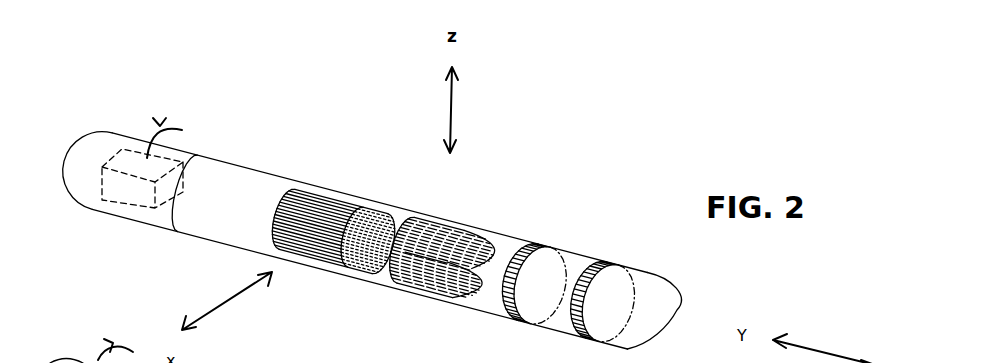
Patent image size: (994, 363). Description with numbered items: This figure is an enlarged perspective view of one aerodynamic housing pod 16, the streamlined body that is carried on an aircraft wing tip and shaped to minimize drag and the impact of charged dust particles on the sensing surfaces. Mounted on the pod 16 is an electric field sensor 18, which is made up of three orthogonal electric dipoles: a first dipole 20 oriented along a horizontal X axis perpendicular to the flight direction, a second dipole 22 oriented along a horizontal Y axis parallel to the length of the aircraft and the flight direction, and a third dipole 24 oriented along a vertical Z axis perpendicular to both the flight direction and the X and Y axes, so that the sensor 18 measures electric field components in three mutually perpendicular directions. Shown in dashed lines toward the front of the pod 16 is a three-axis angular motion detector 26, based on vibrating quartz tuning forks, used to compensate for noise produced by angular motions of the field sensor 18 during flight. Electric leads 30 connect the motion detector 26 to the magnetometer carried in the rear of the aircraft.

The aerodynamic housing pod 16 is at (648, 298).
The electric field sensor 18 is at (566, 193).
The first dipole 20 is at (373, 230).
The second dipole 22 is at (448, 258).
The third dipole 24 is at (590, 263).
The angular motion detector 26 is at (137, 193).
The electric leads 30 is at (147, 157).